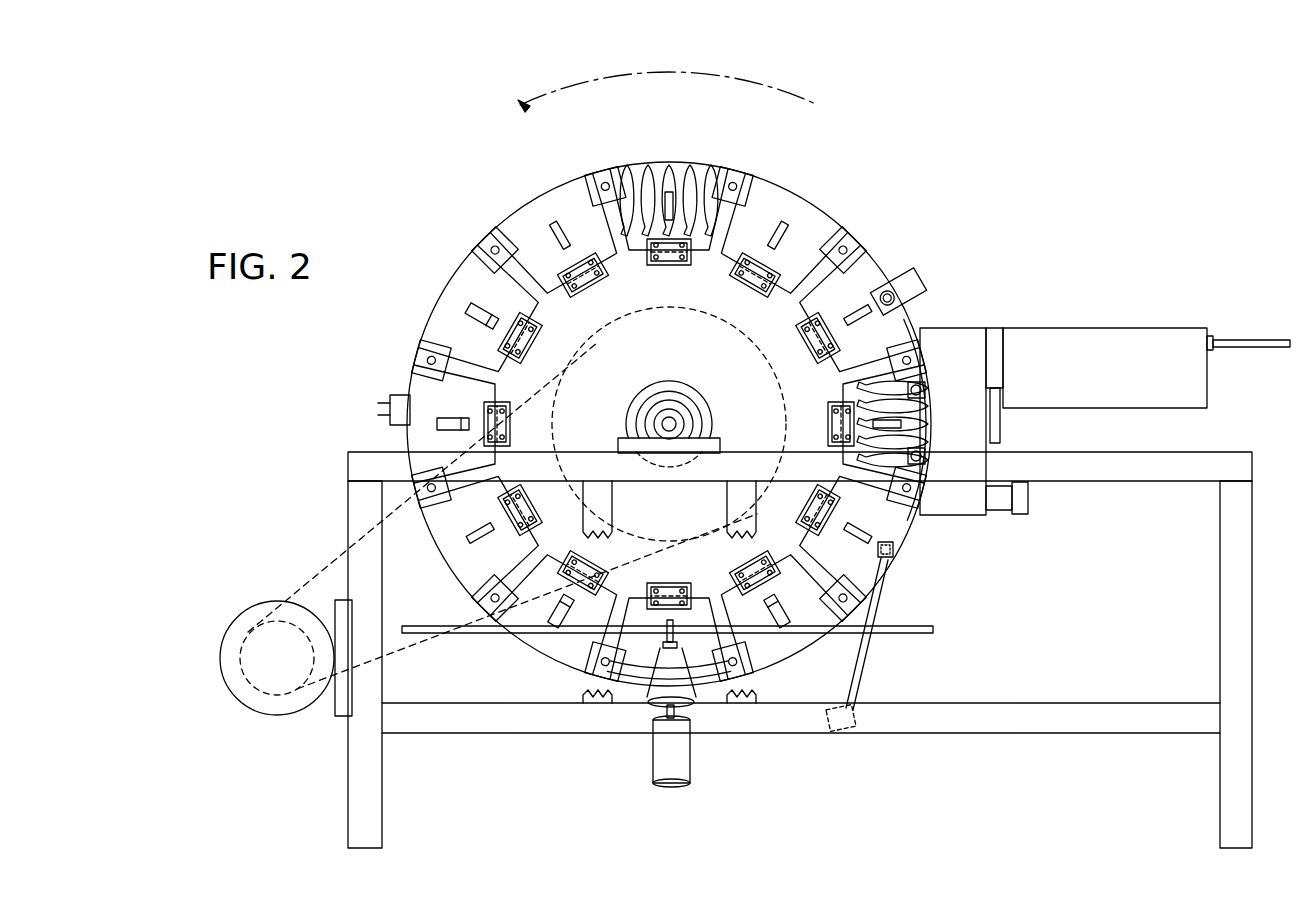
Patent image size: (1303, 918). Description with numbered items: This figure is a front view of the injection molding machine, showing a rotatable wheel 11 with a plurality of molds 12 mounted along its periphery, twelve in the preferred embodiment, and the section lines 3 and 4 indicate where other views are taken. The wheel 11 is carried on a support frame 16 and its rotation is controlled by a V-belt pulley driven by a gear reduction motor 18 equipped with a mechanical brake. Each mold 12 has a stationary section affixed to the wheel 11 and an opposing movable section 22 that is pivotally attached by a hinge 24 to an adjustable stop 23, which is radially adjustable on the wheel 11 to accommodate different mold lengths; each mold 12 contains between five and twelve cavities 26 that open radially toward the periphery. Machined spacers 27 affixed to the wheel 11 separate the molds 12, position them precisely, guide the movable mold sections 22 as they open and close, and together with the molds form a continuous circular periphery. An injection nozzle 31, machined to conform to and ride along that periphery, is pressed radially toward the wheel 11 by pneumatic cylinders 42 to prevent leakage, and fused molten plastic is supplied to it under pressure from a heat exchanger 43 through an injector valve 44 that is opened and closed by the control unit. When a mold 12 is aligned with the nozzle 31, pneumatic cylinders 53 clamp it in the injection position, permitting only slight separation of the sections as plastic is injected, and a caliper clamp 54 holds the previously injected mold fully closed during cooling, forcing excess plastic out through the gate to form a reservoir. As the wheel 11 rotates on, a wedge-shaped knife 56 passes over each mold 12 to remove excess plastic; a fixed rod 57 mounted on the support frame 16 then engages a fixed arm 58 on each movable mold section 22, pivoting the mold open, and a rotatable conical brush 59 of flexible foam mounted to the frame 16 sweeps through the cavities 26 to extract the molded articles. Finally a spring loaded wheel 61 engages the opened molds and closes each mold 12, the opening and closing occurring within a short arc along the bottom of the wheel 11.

The section line 3- 3 is at (197, 54).
The section line 4- 4 is at (660, 55).
The rotatable wheel 11 is at (718, 272).
The mold 12 is at (818, 226).
The support frame 16 is at (370, 782).
The gear reduction motor 18 is at (252, 612).
The movable mold section 22 is at (527, 226).
The adjustable stop 23 is at (669, 424).
The hinge 24 is at (592, 274).
The cavity 26 is at (710, 165).
The machined spacer 27 is at (488, 246).
The injection nozzle 31 is at (960, 357).
The pneumatic cylinder 42 is at (1020, 498).
The heat exchanger 43 is at (1135, 348).
The injector valve 44 is at (997, 340).
The pneumatic cylinder 53 is at (918, 388).
The caliper clamp 54 is at (898, 290).
The wedge-shaped knife 56 is at (394, 394).
The fixed rod 57 is at (870, 630).
The fixed arm 58 is at (474, 320).
The rotatable conical brush 59 is at (645, 695).
The spring loaded wheel 61 is at (894, 549).